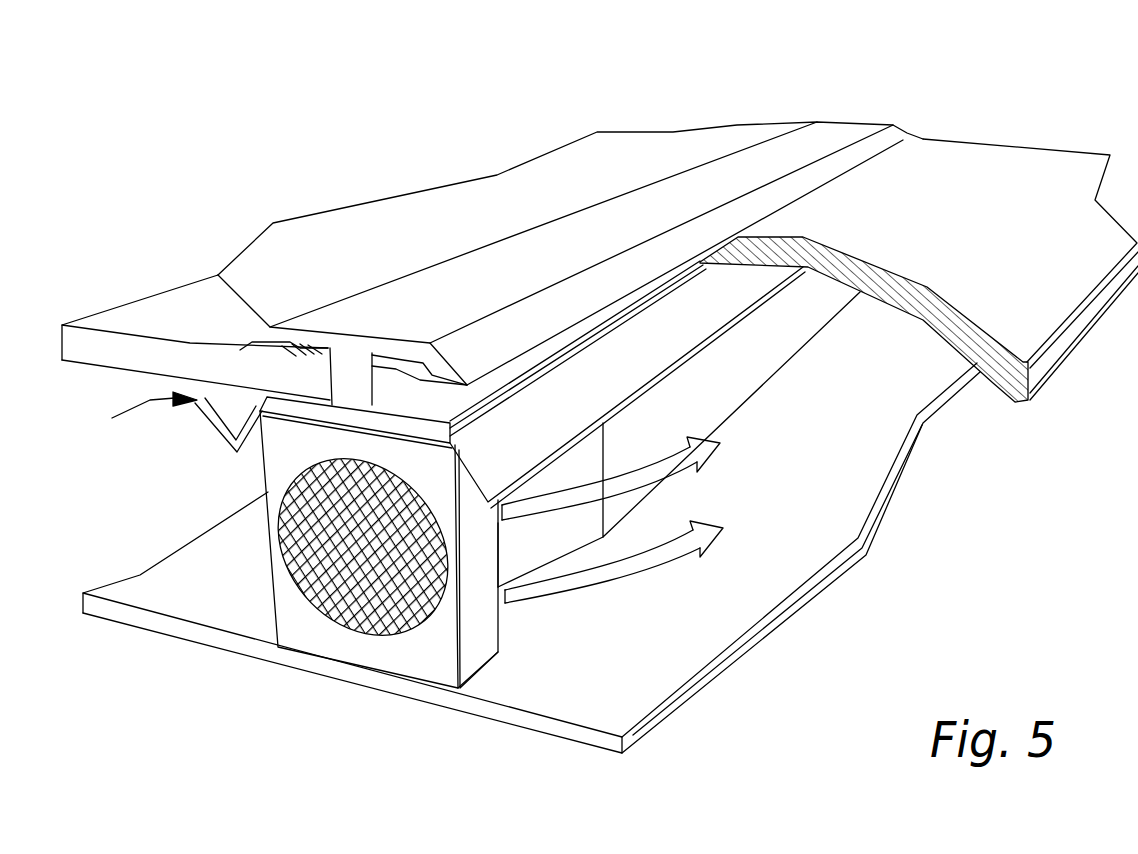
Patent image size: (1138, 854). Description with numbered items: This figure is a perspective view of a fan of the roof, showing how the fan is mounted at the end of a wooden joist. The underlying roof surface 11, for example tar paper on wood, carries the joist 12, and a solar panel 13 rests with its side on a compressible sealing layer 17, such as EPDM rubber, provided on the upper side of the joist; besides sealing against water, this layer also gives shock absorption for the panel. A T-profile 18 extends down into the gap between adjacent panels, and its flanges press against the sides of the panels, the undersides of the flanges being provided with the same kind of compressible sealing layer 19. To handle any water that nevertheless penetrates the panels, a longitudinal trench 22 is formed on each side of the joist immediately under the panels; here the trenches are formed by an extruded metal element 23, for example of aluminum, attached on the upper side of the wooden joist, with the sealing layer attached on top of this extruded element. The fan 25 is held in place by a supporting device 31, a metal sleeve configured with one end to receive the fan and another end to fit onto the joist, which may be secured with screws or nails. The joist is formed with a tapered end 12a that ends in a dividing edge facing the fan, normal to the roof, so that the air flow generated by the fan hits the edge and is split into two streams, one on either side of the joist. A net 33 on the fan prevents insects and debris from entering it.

The underlying roof surface 11 is at (823, 550).
The joist 12 is at (765, 353).
The tapered end 12a is at (537, 542).
The solar panel 13 is at (1010, 213).
The compressible sealing layer 17 is at (403, 400).
The T-profile 18 is at (457, 287).
The compressible sealing layer 19 is at (268, 350).
The longitudinal trench 22 is at (232, 418).
The extruded metal element 23 is at (136, 414).
The fan 25 is at (413, 643).
The supporting device 31 is at (478, 637).
The net 33 is at (333, 577).